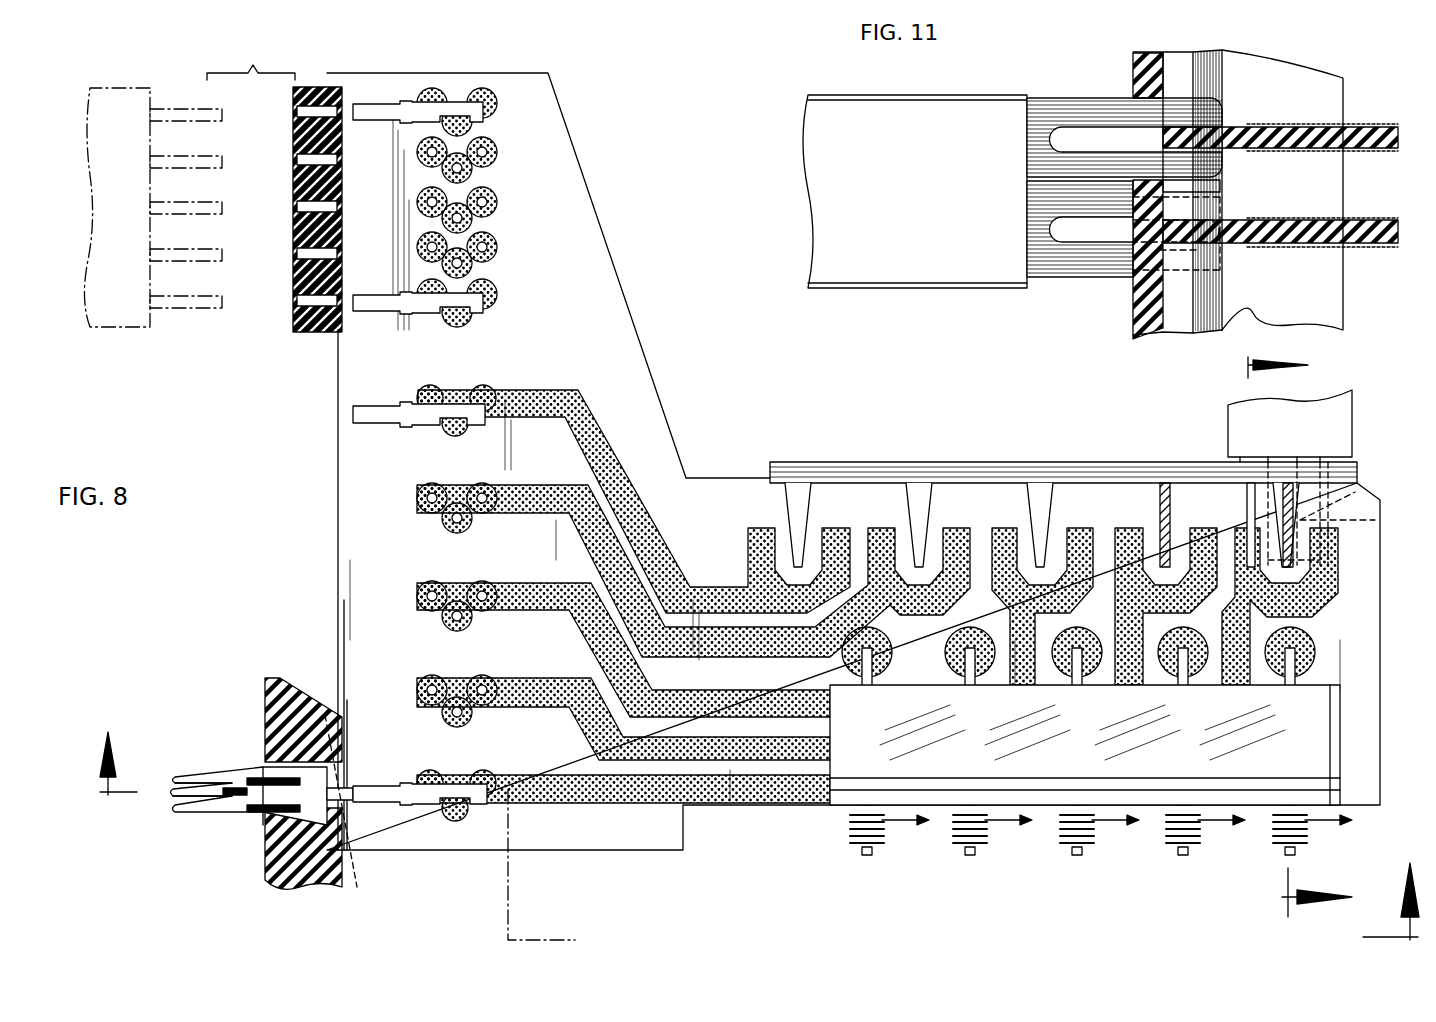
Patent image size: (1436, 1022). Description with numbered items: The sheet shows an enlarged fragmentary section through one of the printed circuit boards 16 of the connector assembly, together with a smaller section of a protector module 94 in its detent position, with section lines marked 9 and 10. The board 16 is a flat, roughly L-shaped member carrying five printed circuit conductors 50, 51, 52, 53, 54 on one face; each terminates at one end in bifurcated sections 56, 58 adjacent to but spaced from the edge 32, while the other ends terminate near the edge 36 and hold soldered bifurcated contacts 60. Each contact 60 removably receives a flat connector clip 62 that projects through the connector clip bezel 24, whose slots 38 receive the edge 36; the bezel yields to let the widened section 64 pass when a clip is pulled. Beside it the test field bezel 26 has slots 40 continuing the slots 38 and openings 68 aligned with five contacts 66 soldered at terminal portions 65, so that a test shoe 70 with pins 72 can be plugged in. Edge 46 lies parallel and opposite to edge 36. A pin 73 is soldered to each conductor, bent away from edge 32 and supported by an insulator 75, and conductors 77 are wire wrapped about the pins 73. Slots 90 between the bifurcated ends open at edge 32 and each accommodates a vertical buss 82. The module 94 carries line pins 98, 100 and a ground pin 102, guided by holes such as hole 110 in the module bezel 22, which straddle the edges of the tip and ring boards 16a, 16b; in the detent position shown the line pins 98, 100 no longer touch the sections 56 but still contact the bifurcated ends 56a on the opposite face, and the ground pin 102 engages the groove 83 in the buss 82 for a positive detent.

In FIG. 8, the printed circuit board 16 is at (642, 375).
In FIG. 11, the tip board 16a is at (1390, 120).
In FIG. 11, the ring board 16b is at (1390, 250).
In FIG. 8, the module bezel 22 is at (838, 462).
In FIG. 11, the module bezel 22 is at (1133, 322).
In FIG. 8, the connector clip bezel 24 is at (275, 678).
In FIG. 8, the test field bezel 26 is at (302, 335).
In FIG. 8, the edge 32 is at (695, 470).
In FIG. 8, the edge 36 is at (325, 522).
In FIG. 8, the slot 38 is at (355, 862).
In FIG. 8, the slot 40 is at (343, 82).
In FIG. 8, the edge 46 is at (1380, 698).
In FIG. 8, the printed circuit conductor 50 is at (538, 390).
In FIG. 8, the printed circuit conductor 51 is at (518, 486).
In FIG. 8, the printed circuit conductor 52 is at (540, 583).
In FIG. 8, the printed circuit conductor 53 is at (538, 678).
In FIG. 8, the printed circuit conductor 54 is at (538, 775).
In FIG. 8, the bifurcated section 56 is at (745, 540).
In FIG. 11, the bifurcated section 56 is at (1300, 126).
In FIG. 11, the bifurcated end 56a is at (1372, 152).
In FIG. 8, the bifurcated section 58 is at (840, 540).
In FIG. 8, the bifurcated contact 60 is at (402, 785).
In FIG. 8, the connector clip 62 is at (195, 772).
In FIG. 8, the widened section 64 is at (368, 808).
In FIG. 8, the terminal portion 65 is at (490, 108).
In FIG. 8, the contact 66 is at (385, 124).
In FIG. 8, the opening 68 is at (290, 115).
In FIG. 8, the test shoe 70 is at (112, 330).
In FIG. 8, the test shoe pin 72 is at (197, 303).
In FIG. 8, the pin 73 is at (872, 703).
In FIG. 8, the insulator 75 is at (808, 808).
In FIG. 8, the conductor 77 is at (885, 840).
In FIG. 8, the vertical buss 82 is at (1165, 483).
In FIG. 11, the vertical buss 82 is at (1273, 70).
In FIG. 11, the groove 83 is at (1195, 337).
In FIG. 8, the slot 90 is at (920, 500).
In FIG. 11, the module 94 is at (942, 295).
In FIG. 8, the line pin 98 is at (1245, 500).
In FIG. 11, the line pin 98 is at (1062, 100).
In FIG. 8, the line pin 100 is at (1362, 478).
In FIG. 11, the line pin 100 is at (1067, 279).
In FIG. 8, the ground pin 102 is at (1338, 518).
In FIG. 11, the ground pin 102 is at (1224, 183).
In FIG. 11, the hole 110 is at (1118, 97).
In FIG. 8, the section line 9- 9 is at (759, 847).
In FIG. 8, the section line 10- 10 is at (1302, 892).
In FIG. 11, the section line 10- 10 is at (1260, 365).